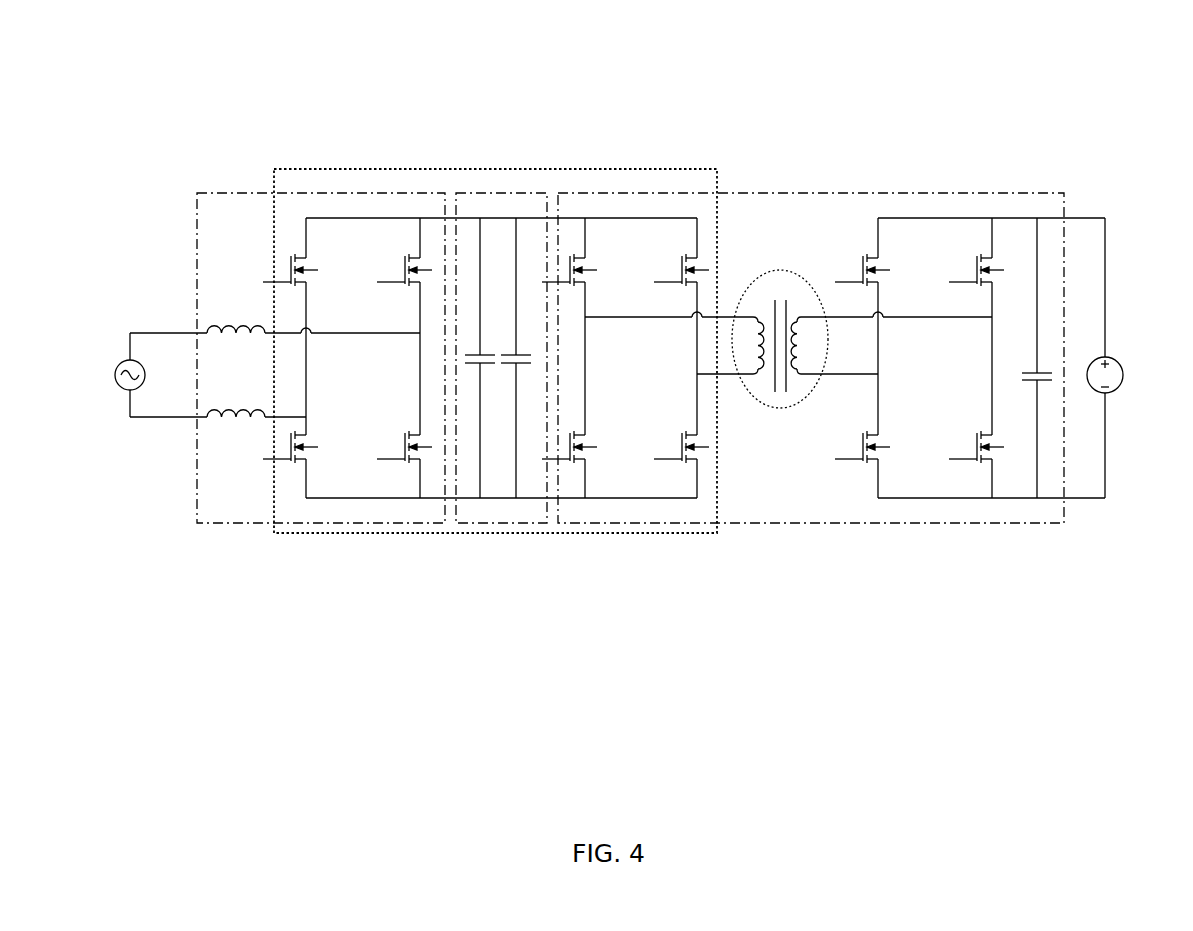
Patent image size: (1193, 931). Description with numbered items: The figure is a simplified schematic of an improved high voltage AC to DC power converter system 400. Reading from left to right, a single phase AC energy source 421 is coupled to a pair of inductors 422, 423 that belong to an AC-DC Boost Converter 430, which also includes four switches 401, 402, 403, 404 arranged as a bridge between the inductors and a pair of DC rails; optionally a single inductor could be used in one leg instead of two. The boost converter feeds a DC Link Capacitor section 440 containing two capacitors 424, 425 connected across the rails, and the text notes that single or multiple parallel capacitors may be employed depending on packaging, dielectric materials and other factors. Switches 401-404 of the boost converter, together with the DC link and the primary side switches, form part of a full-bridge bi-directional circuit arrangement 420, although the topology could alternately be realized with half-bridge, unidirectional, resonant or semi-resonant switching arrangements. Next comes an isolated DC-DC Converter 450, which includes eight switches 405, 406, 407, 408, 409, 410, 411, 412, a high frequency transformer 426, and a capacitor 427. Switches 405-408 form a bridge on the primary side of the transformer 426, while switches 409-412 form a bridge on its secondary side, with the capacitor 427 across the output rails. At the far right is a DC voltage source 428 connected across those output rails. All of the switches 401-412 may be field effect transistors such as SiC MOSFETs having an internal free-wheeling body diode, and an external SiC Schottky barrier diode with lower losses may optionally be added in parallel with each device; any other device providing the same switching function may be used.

The High Voltage AC to DC power converter system 400 is at (985, 115).
The full-bridge bi-directional circuit arrangement 420 is at (481, 152).
The single phase AC energy source 421 is at (112, 376).
The inductor 422 is at (197, 308).
The inductor 423 is at (197, 429).
The capacitor 424 is at (486, 346).
The capacitor 425 is at (505, 372).
The high frequency transformer 426 is at (805, 403).
The capacitor 427 is at (1026, 358).
The DC voltage source 428 is at (1126, 358).
The AC-DC Boost Converter 430 is at (240, 535).
The DC Link Capacitor section 440 is at (455, 535).
The isolated DC-DC Converter 450 is at (745, 530).
The switch 401 is at (303, 261).
The switch 402 is at (404, 261).
The switch 403 is at (303, 437).
The switch 404 is at (404, 437).
The switch 405 is at (582, 261).
The switch 406 is at (681, 261).
The switch 407 is at (582, 437).
The switch 408 is at (681, 437).
The switch 409 is at (875, 260).
The switch 410 is at (976, 260).
The switch 411 is at (875, 438).
The switch 412 is at (976, 438).